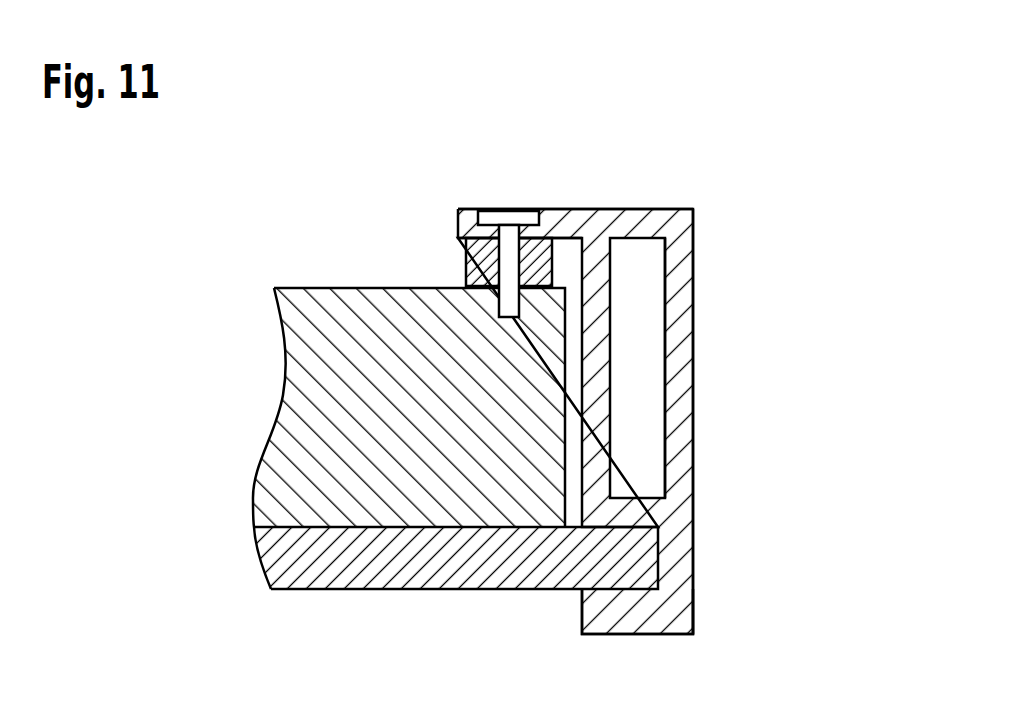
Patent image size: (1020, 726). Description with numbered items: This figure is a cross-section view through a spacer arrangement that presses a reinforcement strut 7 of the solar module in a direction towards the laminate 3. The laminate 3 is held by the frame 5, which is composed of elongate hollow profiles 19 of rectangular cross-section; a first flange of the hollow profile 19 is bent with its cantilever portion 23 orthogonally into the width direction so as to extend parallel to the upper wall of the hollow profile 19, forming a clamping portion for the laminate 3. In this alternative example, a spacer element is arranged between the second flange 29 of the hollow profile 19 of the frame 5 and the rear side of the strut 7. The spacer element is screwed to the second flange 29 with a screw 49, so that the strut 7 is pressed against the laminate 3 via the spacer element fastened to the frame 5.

The laminate 3 is at (403, 575).
The frame 5 is at (644, 413).
The reinforcement strut 7 is at (325, 300).
The hollow profile 19 is at (683, 352).
The cantilever portion 23 is at (638, 615).
The second flange 29 is at (562, 220).
The screw 49 is at (505, 217).